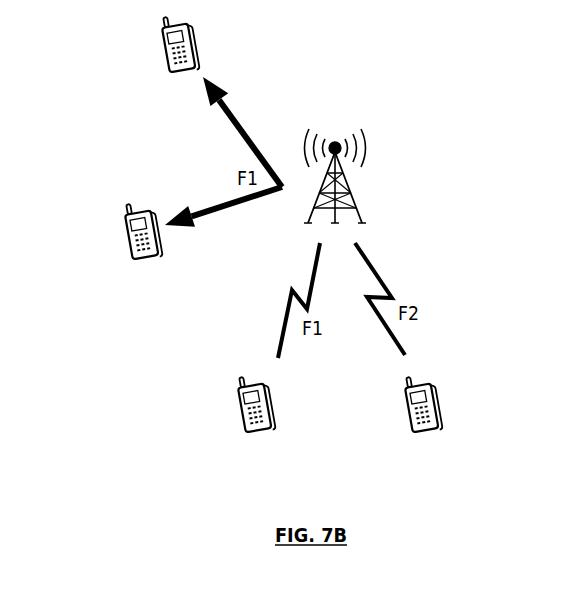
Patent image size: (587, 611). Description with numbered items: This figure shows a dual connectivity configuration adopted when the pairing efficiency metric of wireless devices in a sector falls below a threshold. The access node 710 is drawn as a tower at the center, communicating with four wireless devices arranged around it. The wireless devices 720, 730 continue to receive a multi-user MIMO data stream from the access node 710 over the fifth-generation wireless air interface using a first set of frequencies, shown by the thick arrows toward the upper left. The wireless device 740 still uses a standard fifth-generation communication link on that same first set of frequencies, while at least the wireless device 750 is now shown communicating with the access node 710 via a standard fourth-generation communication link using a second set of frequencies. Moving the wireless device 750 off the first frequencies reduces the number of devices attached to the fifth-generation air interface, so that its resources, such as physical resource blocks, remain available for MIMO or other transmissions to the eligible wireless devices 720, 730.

The access node 710 is at (353, 202).
The wireless device 720 is at (167, 72).
The wireless device 730 is at (130, 258).
The wireless device 740 is at (243, 430).
The wireless device 750 is at (408, 430).